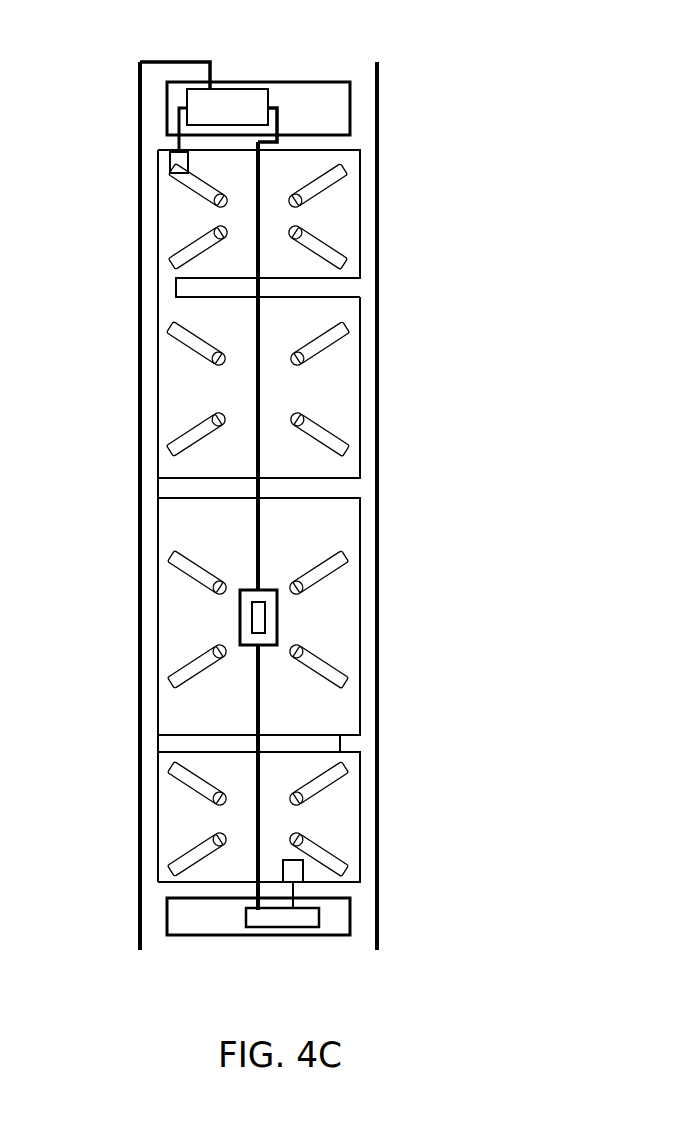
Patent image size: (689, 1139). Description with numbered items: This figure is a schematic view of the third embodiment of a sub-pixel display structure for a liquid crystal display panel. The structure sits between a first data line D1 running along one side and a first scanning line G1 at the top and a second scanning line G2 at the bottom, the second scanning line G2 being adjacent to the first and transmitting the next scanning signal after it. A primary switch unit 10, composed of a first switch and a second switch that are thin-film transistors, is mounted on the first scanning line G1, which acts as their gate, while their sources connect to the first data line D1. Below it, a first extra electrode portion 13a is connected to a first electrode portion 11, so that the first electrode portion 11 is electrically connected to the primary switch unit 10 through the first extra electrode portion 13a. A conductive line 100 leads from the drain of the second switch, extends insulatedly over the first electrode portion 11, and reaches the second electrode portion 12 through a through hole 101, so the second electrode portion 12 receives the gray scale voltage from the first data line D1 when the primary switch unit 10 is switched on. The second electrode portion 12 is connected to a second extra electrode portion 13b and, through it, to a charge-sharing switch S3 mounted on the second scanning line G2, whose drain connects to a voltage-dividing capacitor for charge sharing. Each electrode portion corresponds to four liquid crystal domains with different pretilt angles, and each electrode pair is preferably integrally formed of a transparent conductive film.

The primary switch unit 10 is at (276, 97).
The first scanning line G1 is at (350, 105).
The first extra electrode portion 13a is at (360, 203).
The first electrode portion 11 is at (360, 383).
The conductive line 100 is at (260, 520).
The second electrode portion 12 is at (360, 587).
The through hole 101 is at (290, 618).
The second extra electrode portion 13b is at (360, 812).
The second scanning line G2 is at (350, 917).
The charge-sharing switch S3 is at (307, 920).
The first data line D1 is at (138, 283).